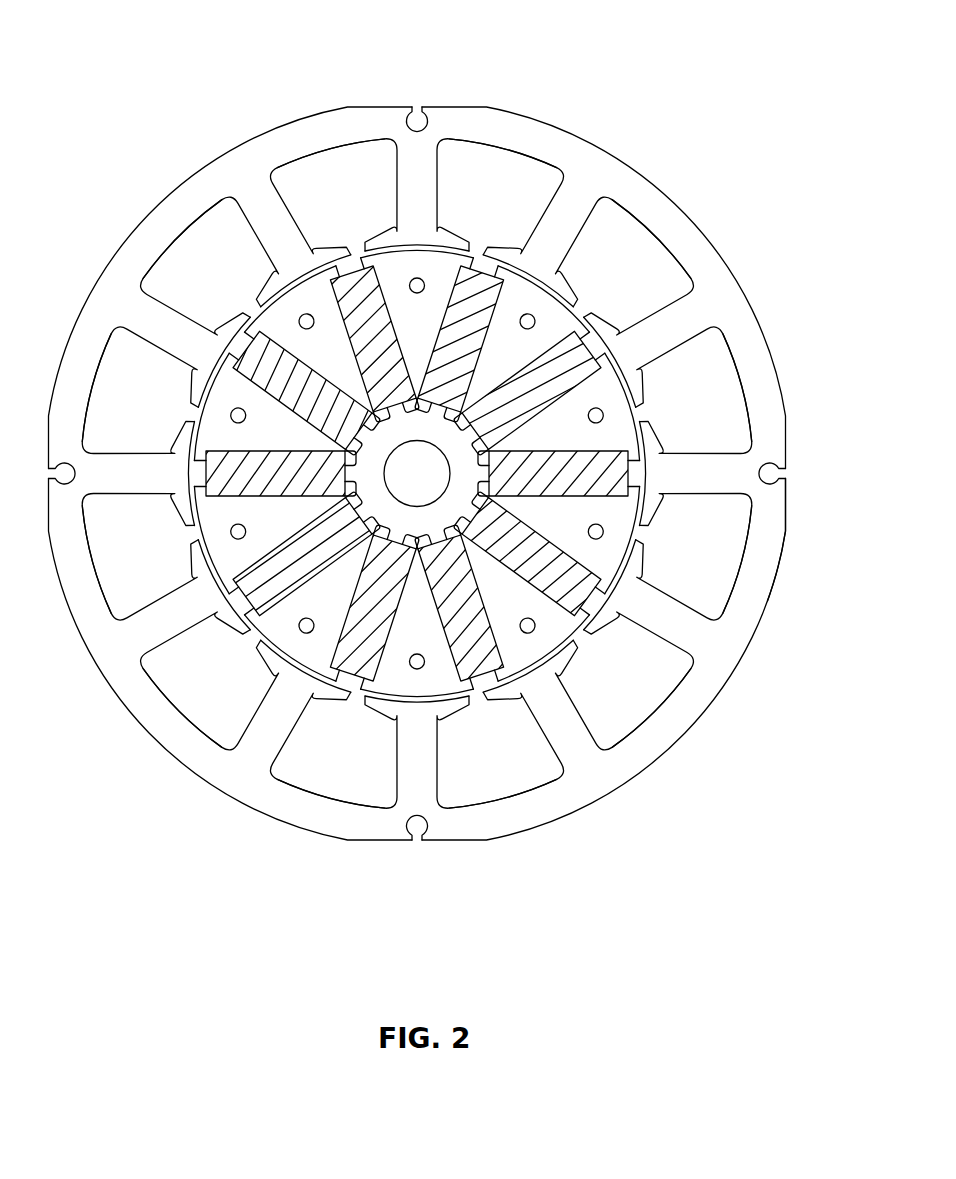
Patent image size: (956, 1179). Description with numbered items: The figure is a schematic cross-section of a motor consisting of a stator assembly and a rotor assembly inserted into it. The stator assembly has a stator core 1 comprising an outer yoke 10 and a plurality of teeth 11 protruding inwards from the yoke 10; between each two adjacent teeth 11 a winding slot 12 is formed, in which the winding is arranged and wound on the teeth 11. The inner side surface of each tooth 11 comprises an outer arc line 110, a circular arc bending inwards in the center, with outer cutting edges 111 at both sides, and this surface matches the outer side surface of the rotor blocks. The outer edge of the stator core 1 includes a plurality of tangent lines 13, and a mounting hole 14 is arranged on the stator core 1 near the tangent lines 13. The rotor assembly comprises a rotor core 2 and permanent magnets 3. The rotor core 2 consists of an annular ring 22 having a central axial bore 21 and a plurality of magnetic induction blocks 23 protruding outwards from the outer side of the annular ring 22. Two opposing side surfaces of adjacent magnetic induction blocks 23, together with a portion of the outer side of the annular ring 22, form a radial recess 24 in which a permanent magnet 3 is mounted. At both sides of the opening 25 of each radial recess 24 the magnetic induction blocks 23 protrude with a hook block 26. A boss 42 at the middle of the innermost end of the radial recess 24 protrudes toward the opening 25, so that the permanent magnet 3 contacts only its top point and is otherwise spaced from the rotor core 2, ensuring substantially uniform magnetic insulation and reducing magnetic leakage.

The stator core 1 is at (742, 287).
The yoke 10 is at (748, 360).
The teeth 11 is at (713, 470).
The winding slot 12 is at (630, 257).
The tangent lines 13 is at (786, 513).
The mounting hole 14 is at (777, 472).
The outer arc line 110 is at (193, 405).
The outer cutting edges 111 is at (191, 404).
The rotor core 2 is at (213, 505).
The central axial bore 21 is at (427, 470).
The annular ring 22 is at (365, 487).
The magnetic induction blocks 23 is at (335, 330).
The radial recess 24 is at (577, 327).
The opening 25 is at (485, 268).
The hook block 26 is at (473, 256).
The permanent magnet 3 is at (258, 348).
The boss 42 is at (590, 610).